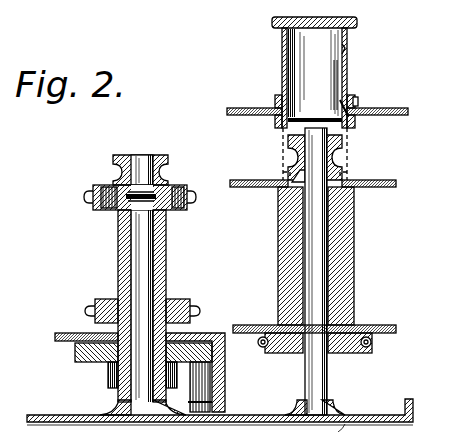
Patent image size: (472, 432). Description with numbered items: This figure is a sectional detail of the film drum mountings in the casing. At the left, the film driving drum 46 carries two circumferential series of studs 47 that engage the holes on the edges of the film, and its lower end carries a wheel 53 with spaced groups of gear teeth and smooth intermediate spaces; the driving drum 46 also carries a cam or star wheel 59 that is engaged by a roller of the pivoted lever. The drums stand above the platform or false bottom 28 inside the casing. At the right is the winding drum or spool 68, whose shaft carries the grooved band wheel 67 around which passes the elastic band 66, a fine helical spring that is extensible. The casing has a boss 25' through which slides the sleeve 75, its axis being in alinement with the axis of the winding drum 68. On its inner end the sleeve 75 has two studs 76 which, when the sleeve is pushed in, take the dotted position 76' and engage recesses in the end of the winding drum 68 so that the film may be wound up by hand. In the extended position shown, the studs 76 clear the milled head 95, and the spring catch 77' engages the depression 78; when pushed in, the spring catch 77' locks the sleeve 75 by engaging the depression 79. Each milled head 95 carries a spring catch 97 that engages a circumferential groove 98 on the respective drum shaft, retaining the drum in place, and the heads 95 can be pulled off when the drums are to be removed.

The boss 25' is at (257, 96).
The platform or false bottom 28 is at (73, 334).
The film driving drum 46 is at (104, 300).
The studs 47 is at (88, 311).
The wheel 53 is at (74, 353).
The cam or star wheel 59 is at (108, 377).
The elastic band 66 is at (373, 343).
The grooved band wheel 67 is at (340, 354).
The winding drum or spool 68 is at (355, 262).
The sleeve 75 is at (280, 56).
The studs 76 is at (293, 128).
The dotted position of studs 76' is at (352, 156).
The spring catch 77' is at (319, 99).
The depression 78 is at (343, 108).
The depression 79 is at (347, 51).
The milled head 95 is at (346, 148).
The spring catch 97 is at (290, 176).
The circumferential groove 98 is at (345, 198).